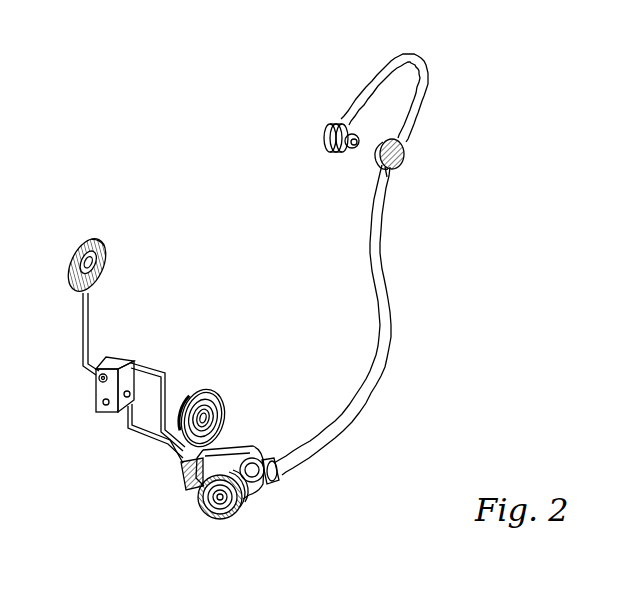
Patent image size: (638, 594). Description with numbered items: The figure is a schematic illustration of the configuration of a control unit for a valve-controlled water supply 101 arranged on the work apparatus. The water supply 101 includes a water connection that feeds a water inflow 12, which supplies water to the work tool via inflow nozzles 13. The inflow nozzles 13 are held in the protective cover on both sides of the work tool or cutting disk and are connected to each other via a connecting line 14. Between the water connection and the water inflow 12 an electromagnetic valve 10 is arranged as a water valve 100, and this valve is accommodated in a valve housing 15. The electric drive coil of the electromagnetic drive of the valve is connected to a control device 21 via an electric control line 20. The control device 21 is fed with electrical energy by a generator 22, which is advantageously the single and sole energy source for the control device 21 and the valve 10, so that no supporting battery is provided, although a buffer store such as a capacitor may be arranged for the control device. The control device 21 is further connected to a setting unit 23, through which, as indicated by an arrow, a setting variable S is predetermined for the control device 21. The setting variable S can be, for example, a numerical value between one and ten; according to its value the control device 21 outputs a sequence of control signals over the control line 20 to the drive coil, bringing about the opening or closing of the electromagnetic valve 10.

The water supply 101 is at (245, 310).
The connecting line 14 is at (413, 58).
The inflow nozzles 13 is at (328, 124).
The water inflow 12 is at (389, 342).
The setting unit 23 is at (80, 248).
The setting variable S is at (76, 315).
The electric control line 20 is at (157, 447).
The control device 21 is at (96, 388).
The generator 22 is at (192, 440).
The electromagnetic valve 10 is at (244, 450).
The valve housing 15 is at (234, 447).
The water valve 100 is at (258, 483).